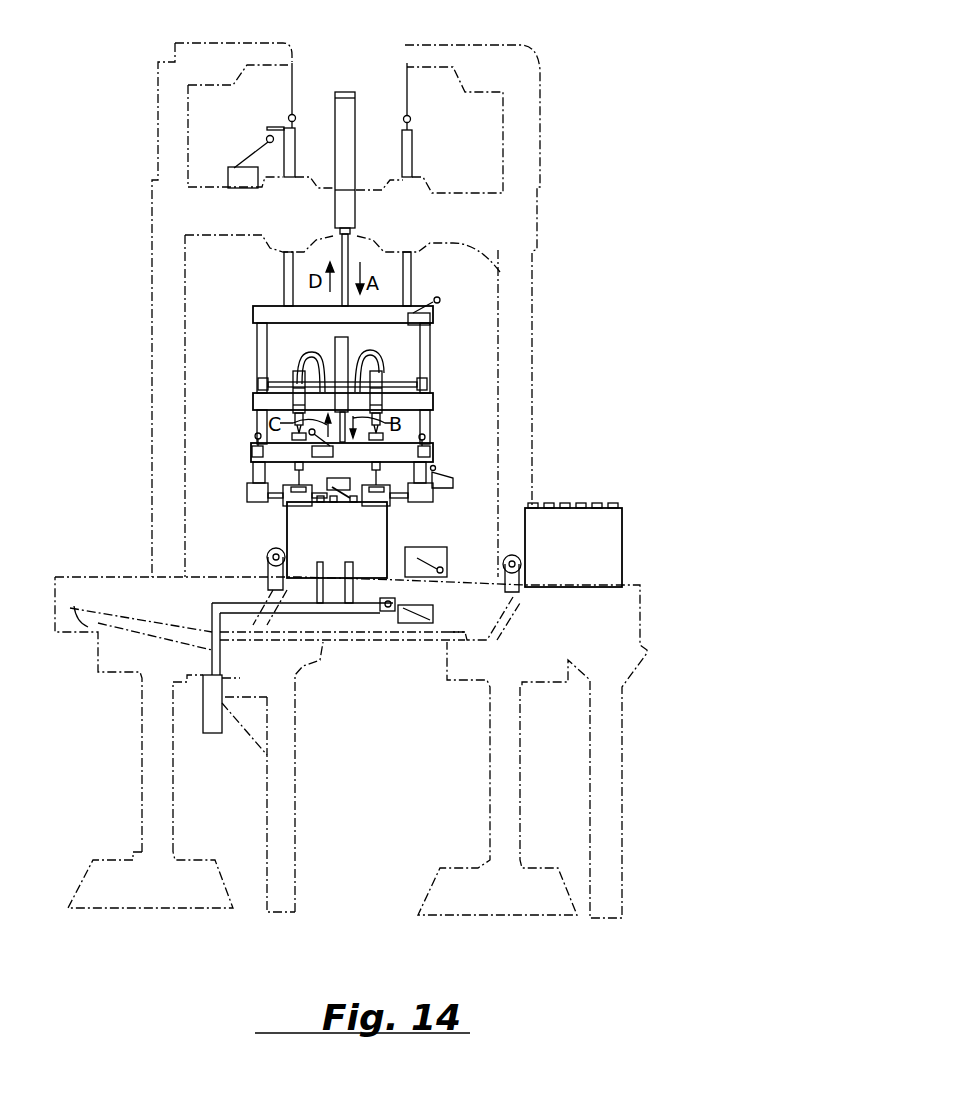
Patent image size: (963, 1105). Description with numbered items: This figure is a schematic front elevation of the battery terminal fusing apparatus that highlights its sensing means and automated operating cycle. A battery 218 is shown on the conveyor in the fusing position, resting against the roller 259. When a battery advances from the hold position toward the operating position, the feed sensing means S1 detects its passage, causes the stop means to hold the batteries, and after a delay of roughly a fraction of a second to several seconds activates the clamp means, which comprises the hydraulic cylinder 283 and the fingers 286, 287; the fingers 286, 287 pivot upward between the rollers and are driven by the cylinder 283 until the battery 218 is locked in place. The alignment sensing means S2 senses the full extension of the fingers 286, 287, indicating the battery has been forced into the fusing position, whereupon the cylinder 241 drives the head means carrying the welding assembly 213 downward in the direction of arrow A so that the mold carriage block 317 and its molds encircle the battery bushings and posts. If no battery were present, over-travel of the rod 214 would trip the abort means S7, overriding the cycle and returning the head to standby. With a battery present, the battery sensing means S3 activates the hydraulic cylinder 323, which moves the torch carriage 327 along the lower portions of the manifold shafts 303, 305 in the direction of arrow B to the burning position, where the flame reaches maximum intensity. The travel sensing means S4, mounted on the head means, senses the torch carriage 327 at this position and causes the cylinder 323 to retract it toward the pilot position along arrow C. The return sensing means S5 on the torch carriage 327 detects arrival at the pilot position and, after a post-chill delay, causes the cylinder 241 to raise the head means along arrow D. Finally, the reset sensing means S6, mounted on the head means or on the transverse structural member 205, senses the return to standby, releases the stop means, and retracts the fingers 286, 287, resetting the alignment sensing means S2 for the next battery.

The transverse structural member 205 is at (500, 272).
The cylinder 241 is at (345, 100).
The rod 214 is at (291, 155).
The abort means S7 is at (232, 175).
The welding assembly 213 is at (340, 393).
The manifold shaft 303 is at (258, 365).
The manifold shaft 305 is at (426, 357).
The hydraulic cylinder 323 is at (348, 350).
The reset sensing means S6 is at (428, 319).
The torch carriage 327 is at (438, 446).
The return sensing means S5 is at (312, 451).
The travel sensing means S4 is at (447, 480).
The battery sensing means S3 is at (340, 480).
The mold carriage block 317 is at (385, 500).
The battery 218 is at (350, 533).
The roller 259 is at (268, 553).
The feed sensing means S1 is at (438, 555).
The finger 286 is at (322, 608).
The finger 287 is at (352, 608).
The hydraulic cylinder 283 is at (213, 733).
The alignment sensing means S2 is at (430, 624).